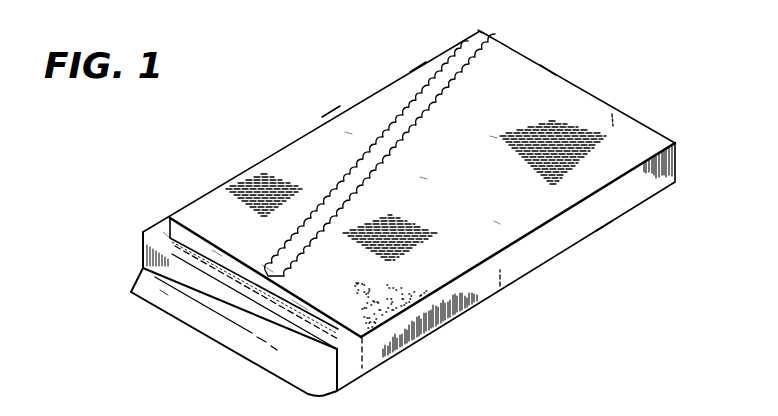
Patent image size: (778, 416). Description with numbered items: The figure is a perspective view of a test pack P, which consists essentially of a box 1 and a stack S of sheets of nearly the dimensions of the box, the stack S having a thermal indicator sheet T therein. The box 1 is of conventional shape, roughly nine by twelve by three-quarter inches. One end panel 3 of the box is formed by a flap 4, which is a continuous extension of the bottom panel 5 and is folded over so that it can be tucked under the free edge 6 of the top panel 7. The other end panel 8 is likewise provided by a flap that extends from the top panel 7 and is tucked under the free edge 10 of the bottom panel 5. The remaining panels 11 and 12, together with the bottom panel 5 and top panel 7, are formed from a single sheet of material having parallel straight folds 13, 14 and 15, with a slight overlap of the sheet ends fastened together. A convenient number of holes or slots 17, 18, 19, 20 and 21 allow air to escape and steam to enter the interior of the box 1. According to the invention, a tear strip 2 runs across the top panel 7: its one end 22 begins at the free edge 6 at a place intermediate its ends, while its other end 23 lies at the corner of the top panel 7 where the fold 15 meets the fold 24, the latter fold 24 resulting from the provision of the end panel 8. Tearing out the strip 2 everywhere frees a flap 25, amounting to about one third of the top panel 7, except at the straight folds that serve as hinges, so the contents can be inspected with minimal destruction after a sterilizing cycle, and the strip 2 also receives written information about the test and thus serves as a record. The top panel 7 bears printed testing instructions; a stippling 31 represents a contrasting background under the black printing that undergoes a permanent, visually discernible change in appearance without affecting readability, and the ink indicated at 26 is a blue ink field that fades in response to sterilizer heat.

The box 1 is at (165, 168).
The tear strip 2 is at (378, 170).
The end panel 3 is at (295, 346).
The flap 4 is at (174, 315).
The bottom panel 5 is at (500, 291).
The free edge 6 is at (218, 253).
The top panel 7 is at (457, 223).
The end panel 8 is at (595, 109).
The free edge 10 is at (573, 107).
The side panel 11 is at (547, 257).
The side panel 12 is at (328, 136).
The fold 13 is at (603, 224).
The fold 14 is at (568, 212).
The fold 15 is at (418, 67).
The hole or slot 17 is at (497, 222).
The hole or slot 18 is at (494, 136).
The hole or slot 19 is at (348, 132).
The hole or slot 20 is at (352, 218).
The hole or slot 21 is at (423, 177).
The end of tear strip 22 is at (274, 264).
The end of tear strip 23 is at (484, 33).
The fold 24 is at (549, 70).
The flap 25 is at (323, 167).
The heat-responsive ink 26 is at (392, 312).
The stippling 31 is at (250, 182).
The stack of sheets S is at (282, 306).
The thermal indicator sheet T is at (166, 236).
The test pack P is at (182, 191).